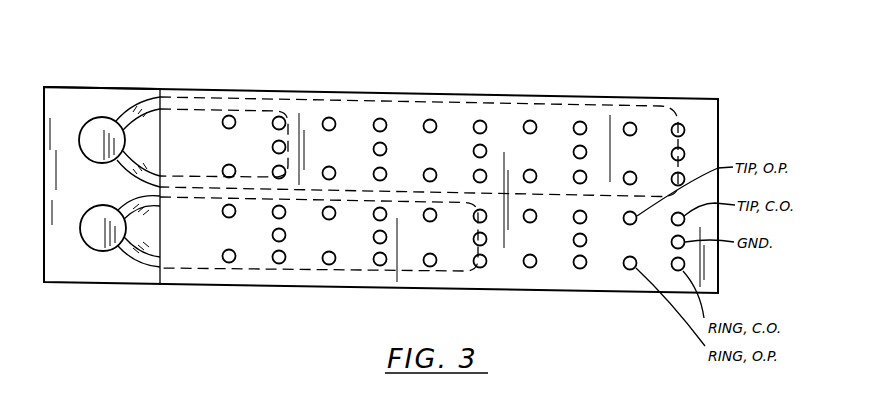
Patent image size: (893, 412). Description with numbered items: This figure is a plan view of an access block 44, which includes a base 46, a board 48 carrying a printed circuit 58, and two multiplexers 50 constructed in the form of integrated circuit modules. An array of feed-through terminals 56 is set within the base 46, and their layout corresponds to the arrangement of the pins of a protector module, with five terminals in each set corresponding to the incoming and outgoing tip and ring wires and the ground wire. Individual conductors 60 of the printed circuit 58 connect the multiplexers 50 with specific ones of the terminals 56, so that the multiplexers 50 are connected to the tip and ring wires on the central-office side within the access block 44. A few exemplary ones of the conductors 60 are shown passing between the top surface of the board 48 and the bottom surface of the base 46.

The access block 44 is at (397, 80).
The base 46 is at (155, 271).
The board 48 is at (63, 86).
The multiplexer 50 is at (102, 143).
The feed-through terminals 56 is at (582, 121).
The printed circuit 58 is at (130, 80).
The conductors 60 is at (148, 106).